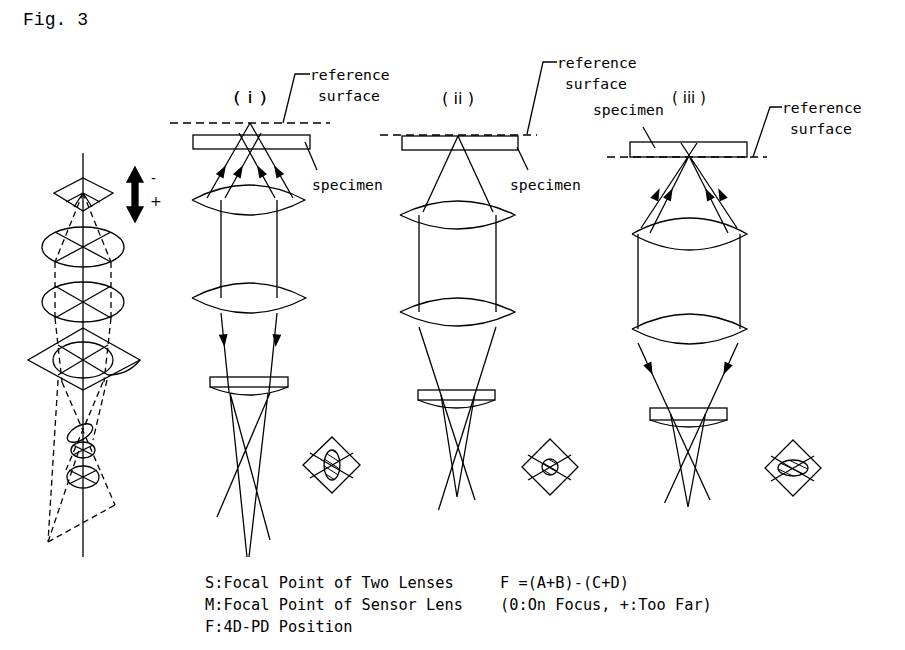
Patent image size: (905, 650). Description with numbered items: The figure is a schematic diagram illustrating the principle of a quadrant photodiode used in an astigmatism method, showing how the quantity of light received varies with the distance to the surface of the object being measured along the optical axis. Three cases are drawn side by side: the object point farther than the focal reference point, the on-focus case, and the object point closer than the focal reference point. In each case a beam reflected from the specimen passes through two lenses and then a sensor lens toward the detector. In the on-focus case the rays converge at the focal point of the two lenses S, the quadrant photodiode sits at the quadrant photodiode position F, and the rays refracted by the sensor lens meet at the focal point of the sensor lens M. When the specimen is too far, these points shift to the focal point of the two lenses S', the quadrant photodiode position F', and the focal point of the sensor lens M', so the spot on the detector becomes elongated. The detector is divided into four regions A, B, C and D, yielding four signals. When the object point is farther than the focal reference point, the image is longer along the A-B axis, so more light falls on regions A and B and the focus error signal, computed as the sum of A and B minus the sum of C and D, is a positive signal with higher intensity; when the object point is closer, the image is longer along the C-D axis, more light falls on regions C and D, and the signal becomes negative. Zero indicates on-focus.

The focal point of two lenses S is at (457, 418).
The 4D-PD position F is at (456, 437).
The focal point of sensor lens M is at (458, 458).
The focal point of two lenses S' is at (688, 423).
The 4D-PD position F' is at (688, 448).
The focal point of sensor lens M' is at (688, 472).
The region A of quadrant photodiode A is at (562, 457).
The region B of quadrant photodiode B is at (564, 479).
The region C of quadrant photodiode C is at (573, 467).
The region D of quadrant photodiode D is at (551, 467).